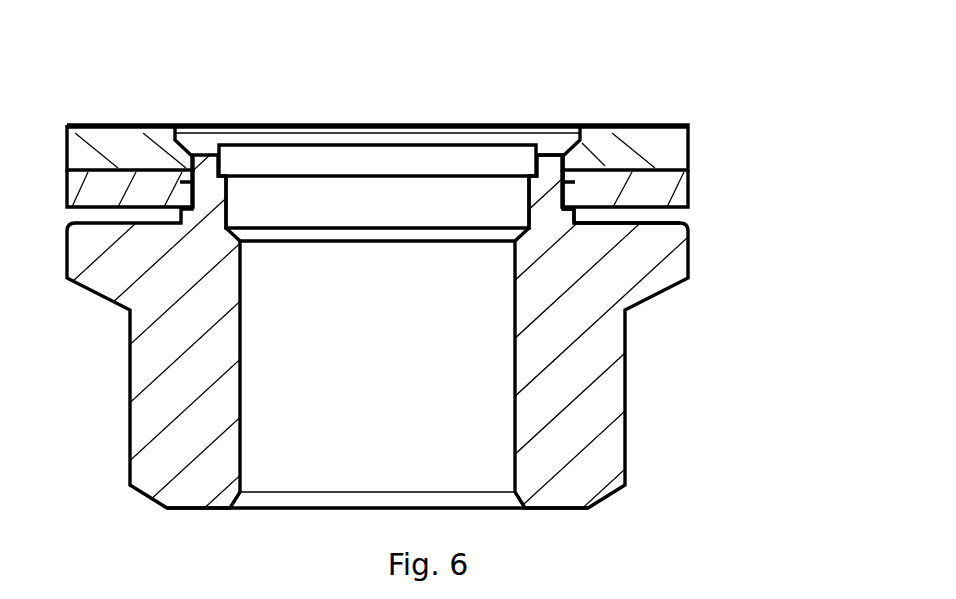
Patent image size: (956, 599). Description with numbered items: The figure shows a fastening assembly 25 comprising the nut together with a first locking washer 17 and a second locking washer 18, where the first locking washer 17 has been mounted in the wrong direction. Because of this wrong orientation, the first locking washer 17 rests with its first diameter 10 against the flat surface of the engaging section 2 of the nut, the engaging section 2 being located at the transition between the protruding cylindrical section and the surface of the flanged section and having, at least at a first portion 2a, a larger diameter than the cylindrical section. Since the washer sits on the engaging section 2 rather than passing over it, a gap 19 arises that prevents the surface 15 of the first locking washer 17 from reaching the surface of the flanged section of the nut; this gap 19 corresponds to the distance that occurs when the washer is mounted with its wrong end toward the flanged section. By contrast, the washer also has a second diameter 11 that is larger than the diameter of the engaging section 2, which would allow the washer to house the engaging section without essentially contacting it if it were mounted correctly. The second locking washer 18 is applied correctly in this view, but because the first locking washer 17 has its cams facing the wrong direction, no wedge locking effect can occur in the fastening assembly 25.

The engaging section 2 is at (573, 220).
The first portion 2a is at (570, 213).
The first diameter 10 is at (563, 200).
The second diameter 11 is at (580, 162).
The surface 15 is at (566, 207).
The first locking washer 17 is at (683, 193).
The second locking washer 18 is at (617, 128).
The gap 19 is at (673, 217).
The fastening assembly 25 is at (277, 87).